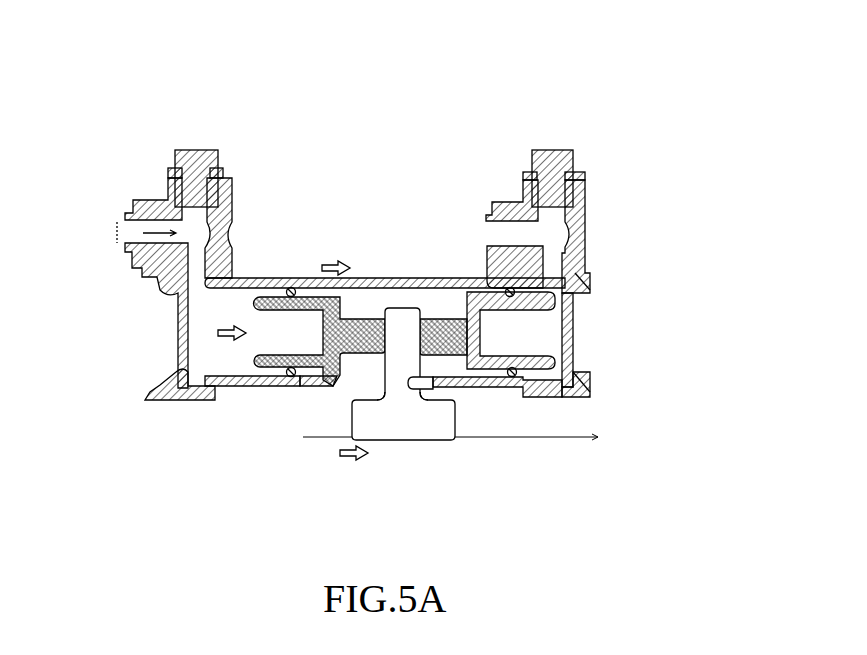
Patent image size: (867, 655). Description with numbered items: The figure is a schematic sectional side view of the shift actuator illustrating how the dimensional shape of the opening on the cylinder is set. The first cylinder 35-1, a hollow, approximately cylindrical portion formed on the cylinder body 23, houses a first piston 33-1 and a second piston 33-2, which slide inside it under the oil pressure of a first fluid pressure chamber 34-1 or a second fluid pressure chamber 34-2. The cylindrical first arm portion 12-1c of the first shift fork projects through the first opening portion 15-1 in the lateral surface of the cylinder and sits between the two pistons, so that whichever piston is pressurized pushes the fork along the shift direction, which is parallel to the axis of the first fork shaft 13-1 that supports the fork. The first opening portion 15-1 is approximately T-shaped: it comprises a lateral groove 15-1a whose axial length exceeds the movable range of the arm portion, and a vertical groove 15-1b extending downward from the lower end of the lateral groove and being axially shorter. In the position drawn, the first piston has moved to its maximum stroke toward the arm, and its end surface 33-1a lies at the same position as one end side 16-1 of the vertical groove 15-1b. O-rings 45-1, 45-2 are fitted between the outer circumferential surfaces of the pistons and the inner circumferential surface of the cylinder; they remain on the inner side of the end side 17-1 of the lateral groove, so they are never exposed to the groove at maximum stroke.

The first fluid pressure chamber 34-1 is at (193, 317).
The second fluid pressure chamber 34-2 is at (576, 317).
The first cylinder 35-1 is at (246, 280).
The first piston 33-1 is at (310, 280).
The end surface 33-1a is at (342, 367).
The second piston 33-2 is at (472, 290).
The cylinder body 23 is at (505, 201).
The first arm portion 12-1c is at (403, 325).
The first fork shaft 13-1 is at (598, 437).
The first opening portion 15-1 is at (370, 397).
The lateral groove 15-1a is at (404, 393).
The vertical groove 15-1b is at (438, 391).
The one end side of the vertical groove 16-1 is at (332, 386).
The end side of the lateral portion 17-1 is at (328, 386).
The O-ring 45-1 is at (292, 380).
The O-ring 45-2 is at (515, 376).